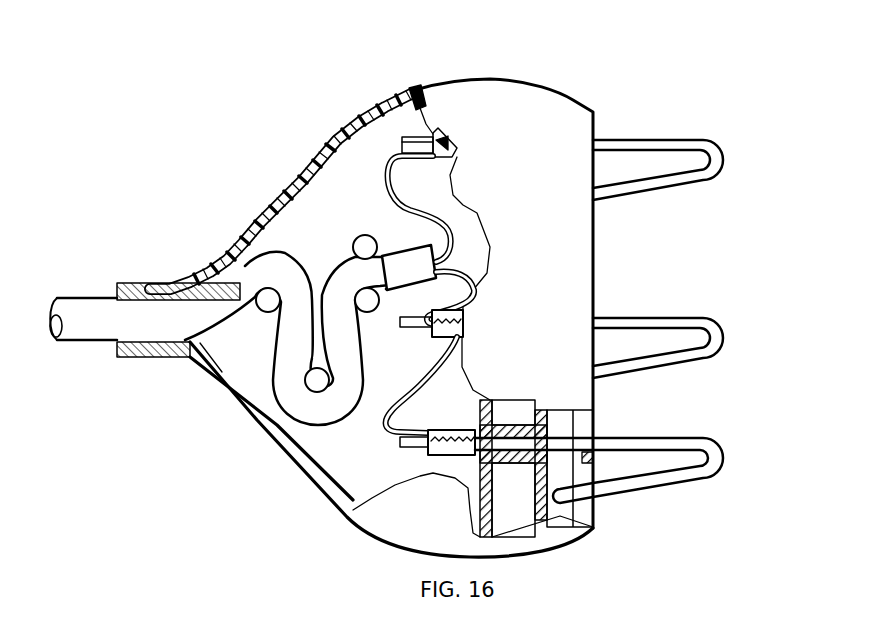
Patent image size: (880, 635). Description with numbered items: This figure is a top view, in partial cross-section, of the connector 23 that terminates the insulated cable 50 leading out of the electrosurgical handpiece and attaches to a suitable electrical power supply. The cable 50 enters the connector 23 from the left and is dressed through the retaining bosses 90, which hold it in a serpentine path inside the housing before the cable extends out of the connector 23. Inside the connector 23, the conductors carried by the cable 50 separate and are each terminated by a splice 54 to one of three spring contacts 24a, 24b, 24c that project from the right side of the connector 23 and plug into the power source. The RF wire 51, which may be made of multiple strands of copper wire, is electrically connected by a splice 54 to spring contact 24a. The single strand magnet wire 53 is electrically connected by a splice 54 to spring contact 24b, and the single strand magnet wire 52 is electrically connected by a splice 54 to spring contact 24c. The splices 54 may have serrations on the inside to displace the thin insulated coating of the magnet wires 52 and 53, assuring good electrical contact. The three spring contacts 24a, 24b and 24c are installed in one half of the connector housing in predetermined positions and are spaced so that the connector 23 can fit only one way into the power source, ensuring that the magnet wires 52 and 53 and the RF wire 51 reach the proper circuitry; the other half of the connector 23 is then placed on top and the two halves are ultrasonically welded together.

The connector 23 is at (280, 123).
The insulated cable 50 is at (66, 296).
The single strand magnet wire 52 is at (387, 432).
The retaining bosses 90 is at (365, 235).
The splice 54 is at (443, 130).
The RF wire 51 is at (430, 225).
The single strand magnet wire 53 is at (472, 283).
The spring contact 24a is at (682, 140).
The spring contact 24b is at (682, 318).
The spring contact 24c is at (682, 438).